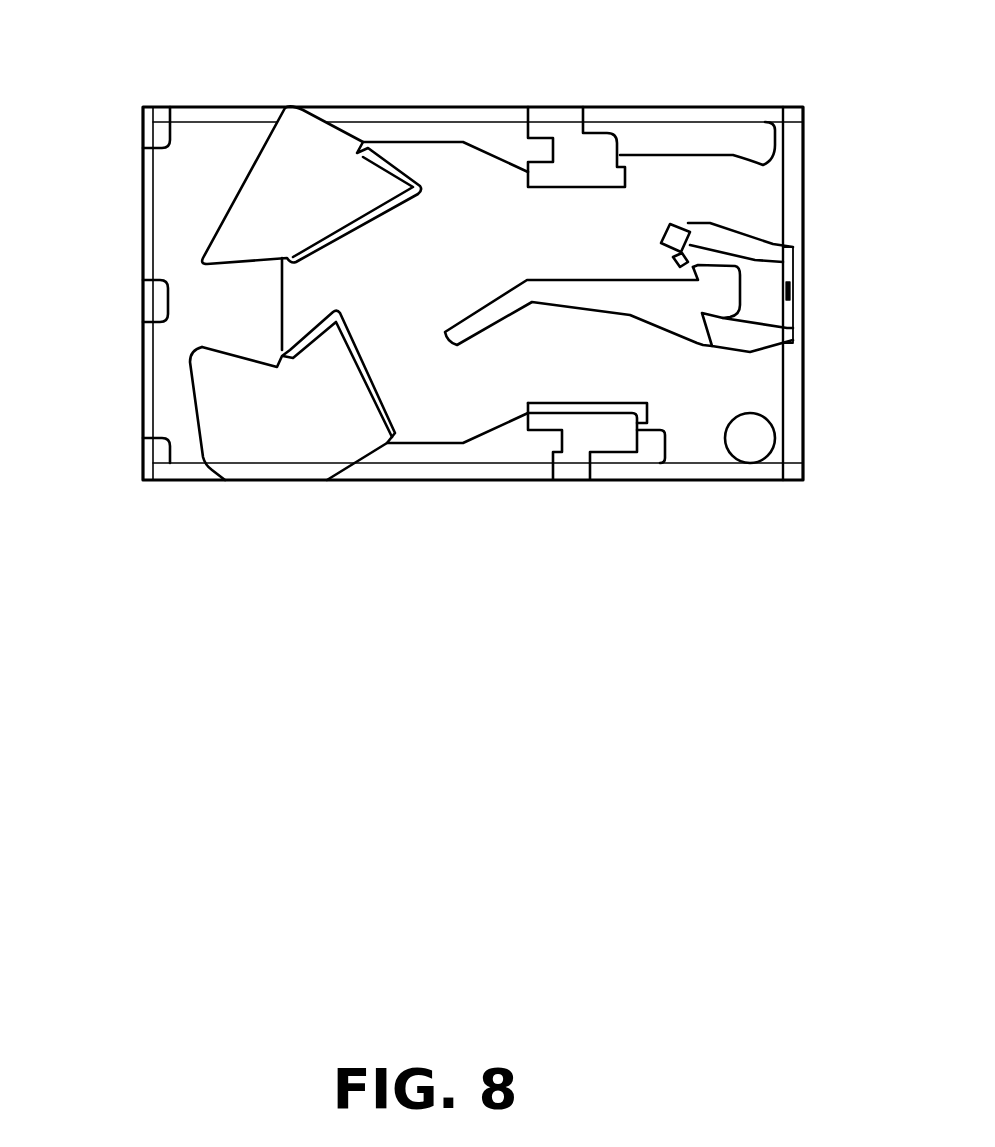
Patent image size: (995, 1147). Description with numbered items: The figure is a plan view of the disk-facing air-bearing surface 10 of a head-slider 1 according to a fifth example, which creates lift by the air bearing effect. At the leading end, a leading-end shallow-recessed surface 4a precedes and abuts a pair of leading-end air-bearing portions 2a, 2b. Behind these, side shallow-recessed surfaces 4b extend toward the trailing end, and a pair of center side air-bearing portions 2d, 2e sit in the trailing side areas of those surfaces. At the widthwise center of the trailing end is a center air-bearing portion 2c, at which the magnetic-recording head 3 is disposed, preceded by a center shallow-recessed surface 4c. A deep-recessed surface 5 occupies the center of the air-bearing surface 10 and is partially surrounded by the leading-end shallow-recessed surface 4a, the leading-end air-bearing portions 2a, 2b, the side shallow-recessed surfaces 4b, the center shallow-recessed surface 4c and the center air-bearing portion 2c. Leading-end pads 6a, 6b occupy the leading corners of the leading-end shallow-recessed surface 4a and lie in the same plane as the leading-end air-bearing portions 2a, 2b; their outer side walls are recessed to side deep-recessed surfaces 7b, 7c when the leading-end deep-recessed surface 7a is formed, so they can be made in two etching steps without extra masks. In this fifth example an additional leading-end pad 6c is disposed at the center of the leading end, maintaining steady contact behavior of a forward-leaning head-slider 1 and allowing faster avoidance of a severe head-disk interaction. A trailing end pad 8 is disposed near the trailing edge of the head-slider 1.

The head-slider 1 is at (222, 112).
The leading-end air-bearing portion 2a is at (311, 181).
The leading-end air-bearing portion 2b is at (285, 433).
The center air-bearing portion 2c is at (767, 275).
The center side air-bearing portion 2d is at (567, 140).
The center side air-bearing portion 2e is at (600, 430).
The magnetic-recording head 3 is at (793, 292).
The leading-end shallow-recessed surface 4a is at (215, 323).
The side shallow-recessed surface 4b is at (477, 137).
The center shallow-recessed surface 4c is at (712, 285).
The deep-recessed surface 5 is at (638, 215).
The leading-end pad 6a is at (158, 135).
The leading-end pad 6b is at (160, 453).
The additional leading-end pad 6c is at (157, 302).
The leading-end deep-recessed surface 7a is at (145, 200).
The side deep-recessed surface 7b is at (195, 473).
The side deep-recessed surface 7c is at (192, 115).
The trailing end pad 8 is at (752, 447).
The air-bearing surface 10 is at (288, 168).